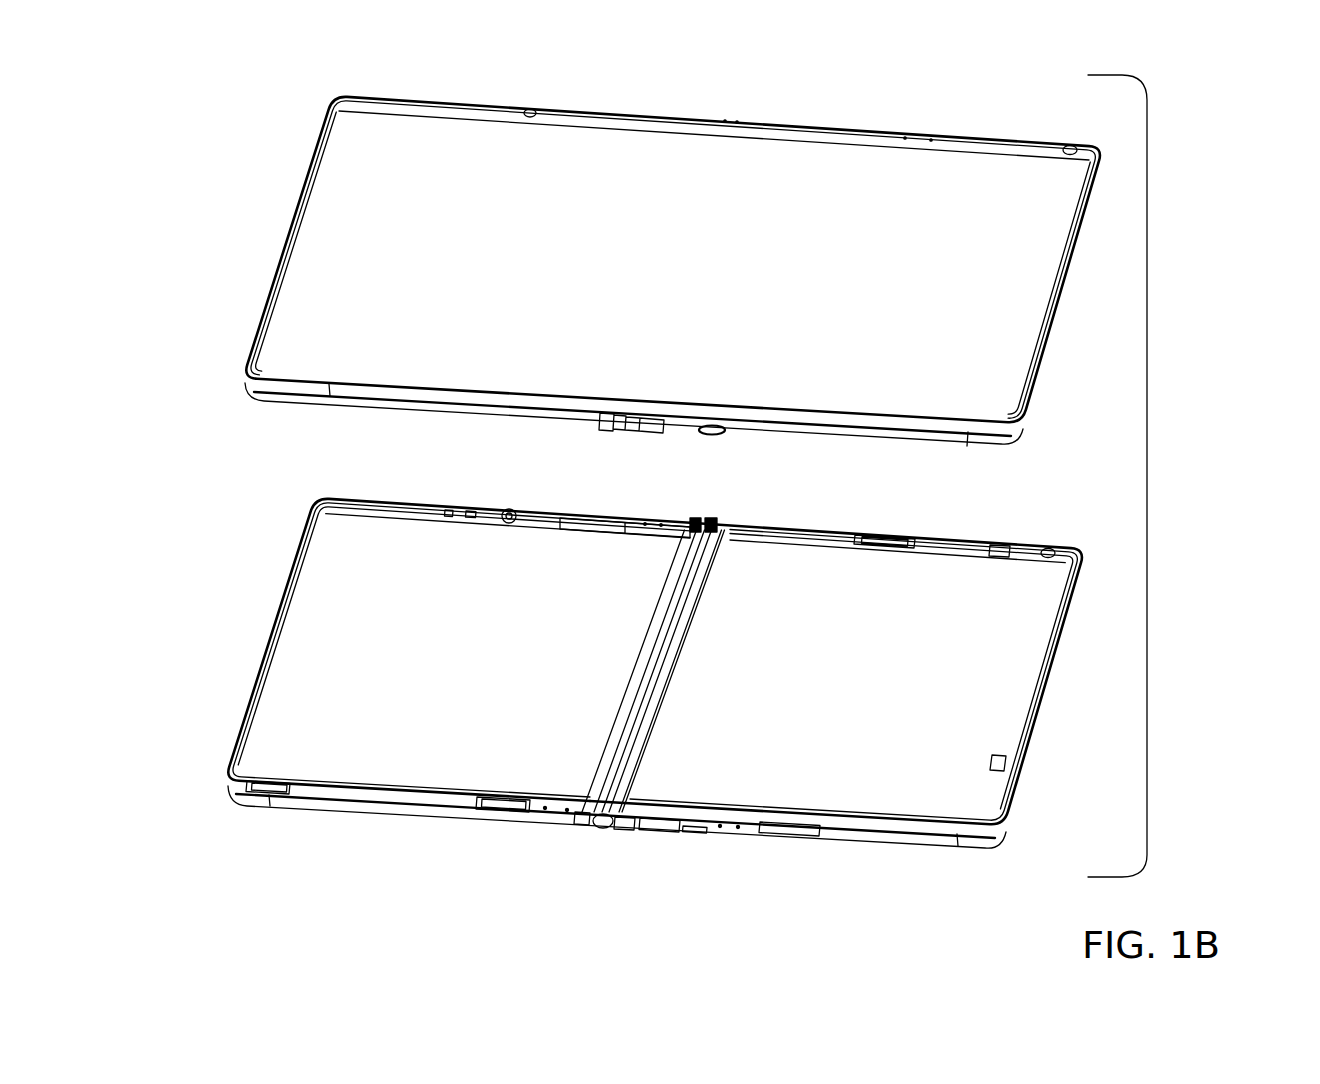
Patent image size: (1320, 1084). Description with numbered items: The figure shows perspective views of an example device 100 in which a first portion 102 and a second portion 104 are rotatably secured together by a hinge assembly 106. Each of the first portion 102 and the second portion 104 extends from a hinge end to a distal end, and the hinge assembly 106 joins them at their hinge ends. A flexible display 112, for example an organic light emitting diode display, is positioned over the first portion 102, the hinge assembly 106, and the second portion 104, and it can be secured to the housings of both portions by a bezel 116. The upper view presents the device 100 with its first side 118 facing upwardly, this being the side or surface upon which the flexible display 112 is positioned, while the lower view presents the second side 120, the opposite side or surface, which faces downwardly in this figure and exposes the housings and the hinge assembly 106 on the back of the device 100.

The device 100 is at (1147, 426).
The first portion 102 is at (279, 555).
The second portion 104 is at (975, 508).
The hinge assembly 106 is at (592, 836).
The flexible display 112 is at (298, 173).
The bezel 116 is at (327, 392).
The first side 118 is at (412, 104).
The second side 120 is at (443, 836).